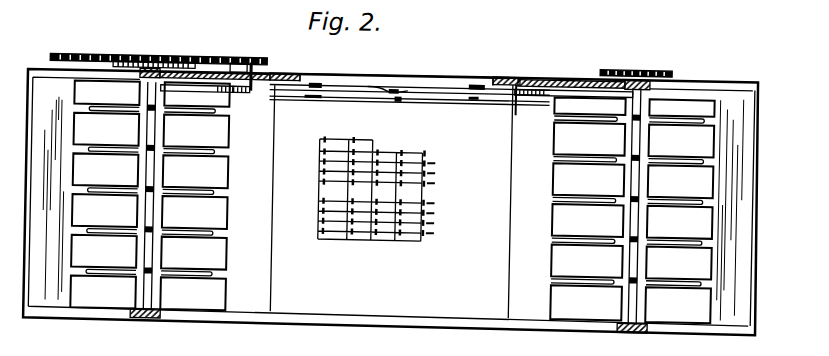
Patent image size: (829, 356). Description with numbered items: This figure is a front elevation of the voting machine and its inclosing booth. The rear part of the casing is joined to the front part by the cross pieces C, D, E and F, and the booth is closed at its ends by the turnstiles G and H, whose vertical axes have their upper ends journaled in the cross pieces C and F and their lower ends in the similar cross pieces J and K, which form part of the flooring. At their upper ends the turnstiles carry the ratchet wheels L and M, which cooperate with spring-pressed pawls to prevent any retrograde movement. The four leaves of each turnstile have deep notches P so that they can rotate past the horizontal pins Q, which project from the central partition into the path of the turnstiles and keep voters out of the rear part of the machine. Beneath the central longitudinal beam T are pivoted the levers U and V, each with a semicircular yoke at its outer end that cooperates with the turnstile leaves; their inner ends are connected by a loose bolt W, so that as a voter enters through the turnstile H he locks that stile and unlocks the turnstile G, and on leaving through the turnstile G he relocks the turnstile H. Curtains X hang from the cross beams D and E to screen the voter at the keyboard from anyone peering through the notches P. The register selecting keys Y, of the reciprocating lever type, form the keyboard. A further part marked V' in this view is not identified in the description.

The cross piece C is at (137, 87).
The cross piece D is at (285, 66).
The cross piece E is at (507, 68).
The cross piece F is at (644, 97).
The turnstile G is at (105, 195).
The turnstile H is at (587, 208).
The cross piece J is at (149, 327).
The cross piece K is at (637, 339).
The ratchet wheel L is at (159, 53).
The ratchet wheel M is at (636, 65).
The deep notches P is at (156, 74).
The horizontal pins Q is at (386, 197).
The central longitudinal beam T is at (397, 67).
The lever U is at (206, 66).
The lever V is at (451, 107).
The shaft V' is at (263, 64).
The loose bolt W is at (388, 77).
The curtains X is at (247, 102).
The keys Y is at (370, 182).